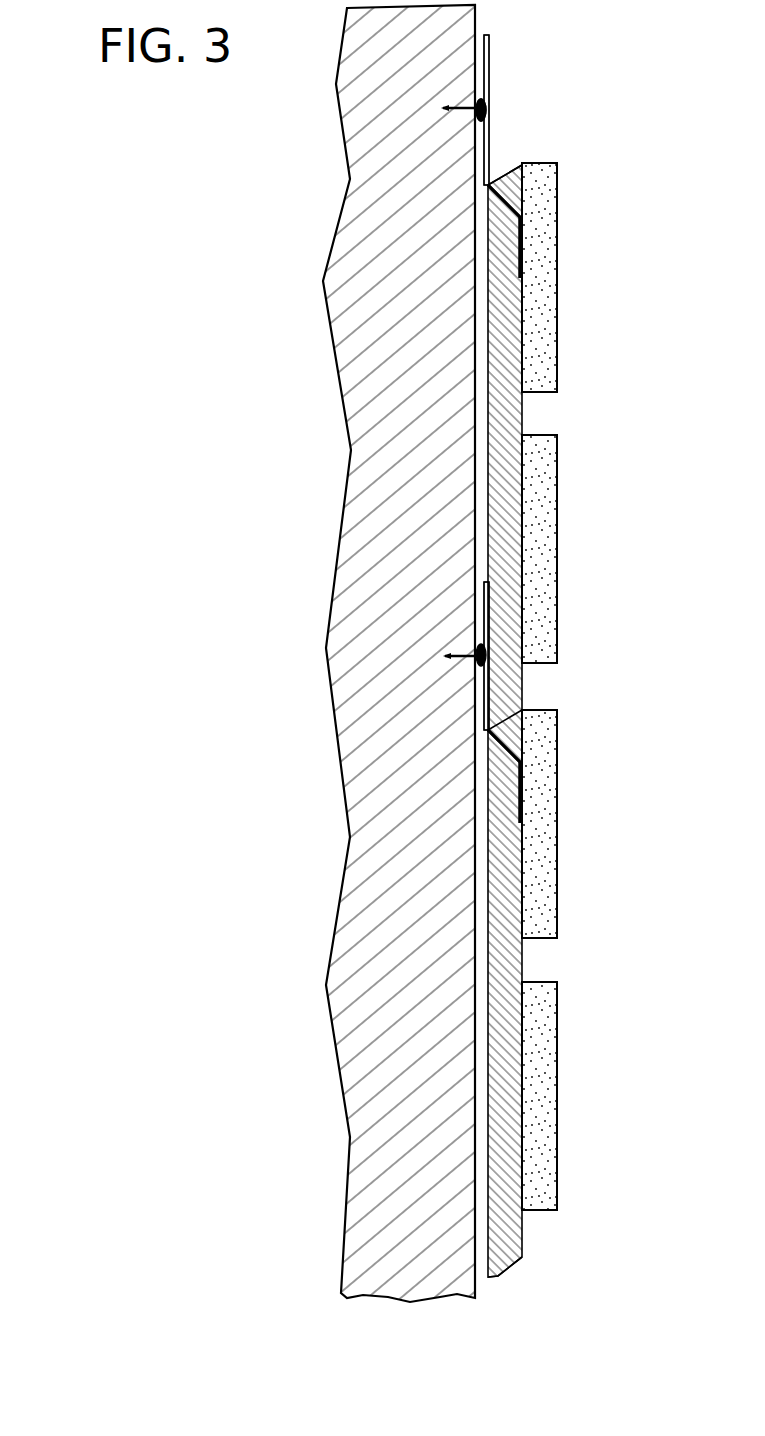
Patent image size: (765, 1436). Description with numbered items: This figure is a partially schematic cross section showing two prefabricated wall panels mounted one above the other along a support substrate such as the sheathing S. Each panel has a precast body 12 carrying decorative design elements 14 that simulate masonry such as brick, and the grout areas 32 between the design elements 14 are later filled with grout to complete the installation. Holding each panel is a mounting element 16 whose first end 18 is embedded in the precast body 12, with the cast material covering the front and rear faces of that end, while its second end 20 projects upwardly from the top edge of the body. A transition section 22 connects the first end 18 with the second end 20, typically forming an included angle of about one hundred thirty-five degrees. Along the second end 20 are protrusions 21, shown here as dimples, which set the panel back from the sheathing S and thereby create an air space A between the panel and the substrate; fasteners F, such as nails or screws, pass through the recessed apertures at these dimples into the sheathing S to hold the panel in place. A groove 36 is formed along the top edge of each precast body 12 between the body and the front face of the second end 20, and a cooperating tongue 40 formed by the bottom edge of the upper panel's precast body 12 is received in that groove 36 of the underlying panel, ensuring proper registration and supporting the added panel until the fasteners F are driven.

The sheathing S is at (358, 400).
The precast body 12 is at (515, 408).
The decorative design element 14 is at (562, 288).
The mounting element 16 is at (520, 63).
The second end 20 is at (491, 76).
The protrusion 21 is at (481, 100).
The fastener F is at (491, 108).
The groove 36 is at (489, 185).
The transition section 22 is at (507, 204).
The first end 18 is at (522, 249).
The tongue 40 is at (487, 745).
The grout area 32 is at (522, 959).
The air space A is at (482, 1003).